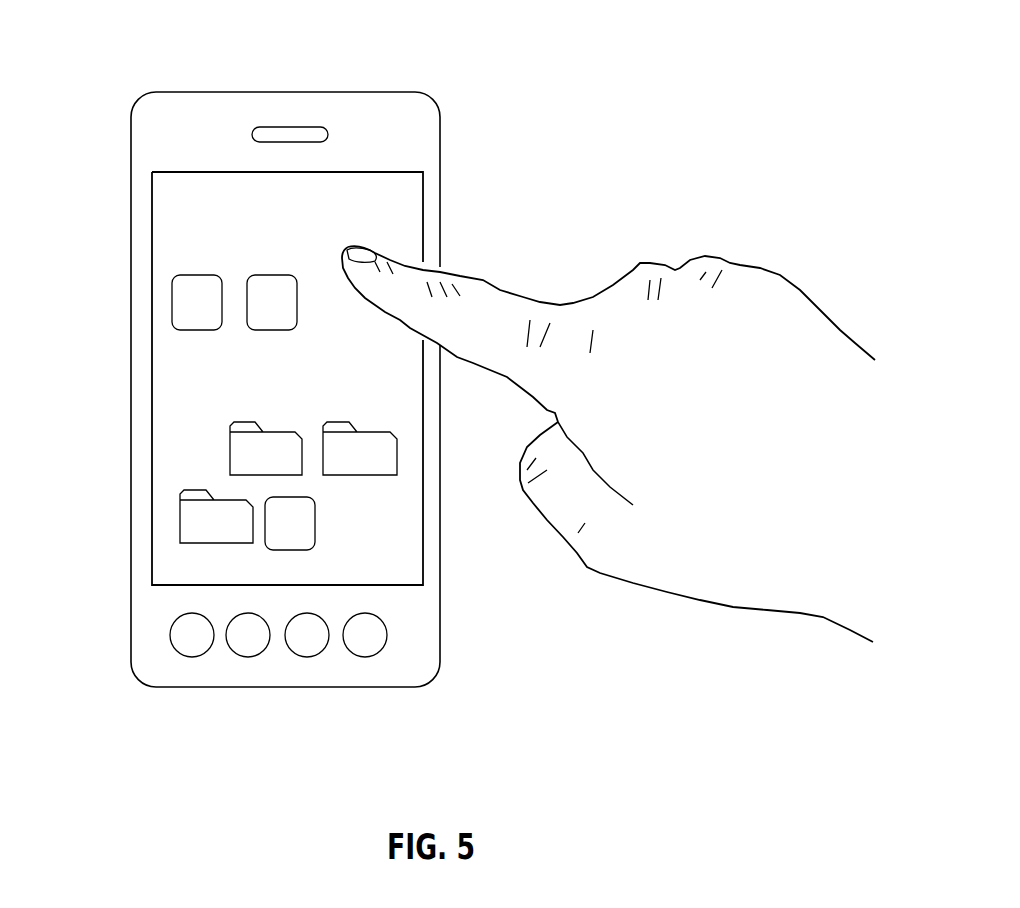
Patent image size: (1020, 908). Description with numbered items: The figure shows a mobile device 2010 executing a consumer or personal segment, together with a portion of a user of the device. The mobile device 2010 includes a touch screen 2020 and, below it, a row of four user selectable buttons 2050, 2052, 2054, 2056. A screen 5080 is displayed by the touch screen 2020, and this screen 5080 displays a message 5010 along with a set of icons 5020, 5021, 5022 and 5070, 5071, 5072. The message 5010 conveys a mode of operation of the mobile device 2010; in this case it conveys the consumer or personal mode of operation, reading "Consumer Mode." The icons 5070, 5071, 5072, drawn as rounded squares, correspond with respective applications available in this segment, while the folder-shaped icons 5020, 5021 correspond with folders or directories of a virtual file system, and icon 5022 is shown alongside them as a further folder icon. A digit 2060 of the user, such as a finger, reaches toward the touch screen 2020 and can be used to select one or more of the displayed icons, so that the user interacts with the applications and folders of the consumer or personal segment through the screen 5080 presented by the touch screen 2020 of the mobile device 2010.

The mobile device 2010 is at (284, 92).
The touch screen 2020 is at (353, 172).
The message 5010 is at (383, 192).
The screen 5080 is at (180, 379).
The icon 5070 is at (218, 312).
The icon 5071 is at (294, 312).
The icon 5072 is at (310, 532).
The icon 5020 is at (277, 463).
The icon 5021 is at (371, 463).
The icon 5022 is at (227, 533).
The user selectable button 2050 is at (205, 656).
The user selectable button 2052 is at (263, 652).
The user selectable button 2054 is at (321, 652).
The user selectable button 2056 is at (380, 652).
The digit 2060 is at (487, 296).